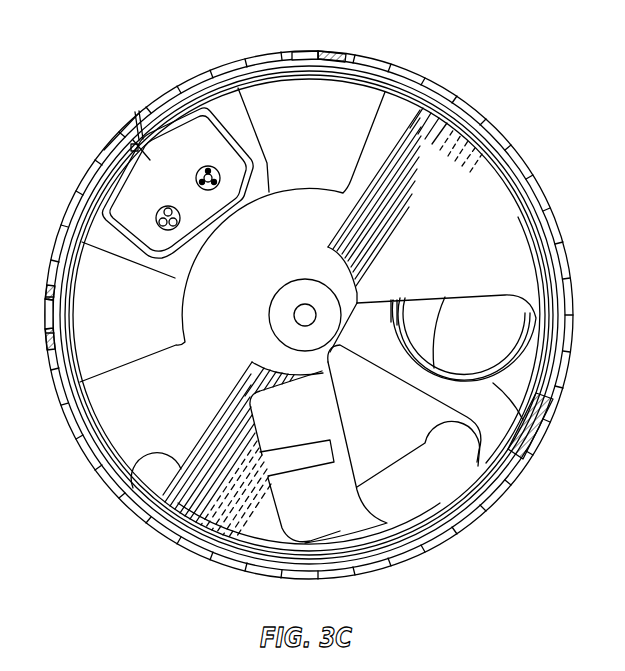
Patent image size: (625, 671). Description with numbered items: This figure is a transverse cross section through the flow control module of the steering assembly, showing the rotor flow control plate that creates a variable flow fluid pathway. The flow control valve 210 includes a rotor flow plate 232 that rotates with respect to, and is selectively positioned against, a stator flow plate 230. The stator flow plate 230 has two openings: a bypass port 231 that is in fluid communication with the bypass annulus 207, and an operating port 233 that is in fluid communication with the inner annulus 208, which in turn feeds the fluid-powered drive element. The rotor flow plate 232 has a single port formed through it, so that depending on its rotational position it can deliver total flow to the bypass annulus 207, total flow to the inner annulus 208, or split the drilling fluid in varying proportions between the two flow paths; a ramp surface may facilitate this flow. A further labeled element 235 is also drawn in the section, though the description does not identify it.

The flow control valve 210 is at (336, 45).
The inner annulus 208 is at (424, 312).
The bypass port 231 is at (353, 398).
The stator flow plate 230 is at (113, 415).
The rotor flow plate 232 is at (143, 478).
The operating port 233 is at (538, 432).
The bypass annulus 207 is at (440, 472).
The cartridge 235 is at (338, 518).